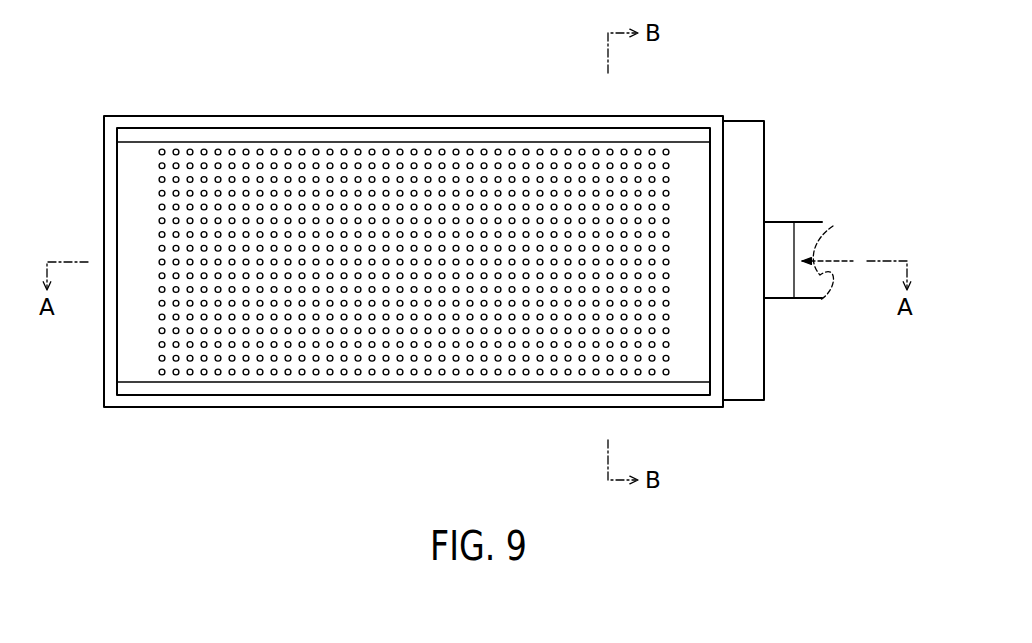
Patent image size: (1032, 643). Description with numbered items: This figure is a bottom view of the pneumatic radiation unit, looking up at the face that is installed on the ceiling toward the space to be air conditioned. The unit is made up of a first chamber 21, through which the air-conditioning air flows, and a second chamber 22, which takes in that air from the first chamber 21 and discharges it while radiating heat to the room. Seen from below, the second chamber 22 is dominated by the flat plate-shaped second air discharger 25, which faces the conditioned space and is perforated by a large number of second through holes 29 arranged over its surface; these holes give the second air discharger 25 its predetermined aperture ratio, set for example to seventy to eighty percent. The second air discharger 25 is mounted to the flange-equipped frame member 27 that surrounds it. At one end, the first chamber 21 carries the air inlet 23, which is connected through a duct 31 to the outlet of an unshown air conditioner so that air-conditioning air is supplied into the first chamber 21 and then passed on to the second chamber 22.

The first chamber 21 is at (749, 117).
The second chamber 22 is at (706, 114).
The air inlet 23 is at (795, 240).
The second air discharger 25 is at (645, 152).
The flange-equipped frame member 27 is at (528, 116).
The second through holes 29 is at (274, 190).
The duct 31 is at (815, 302).